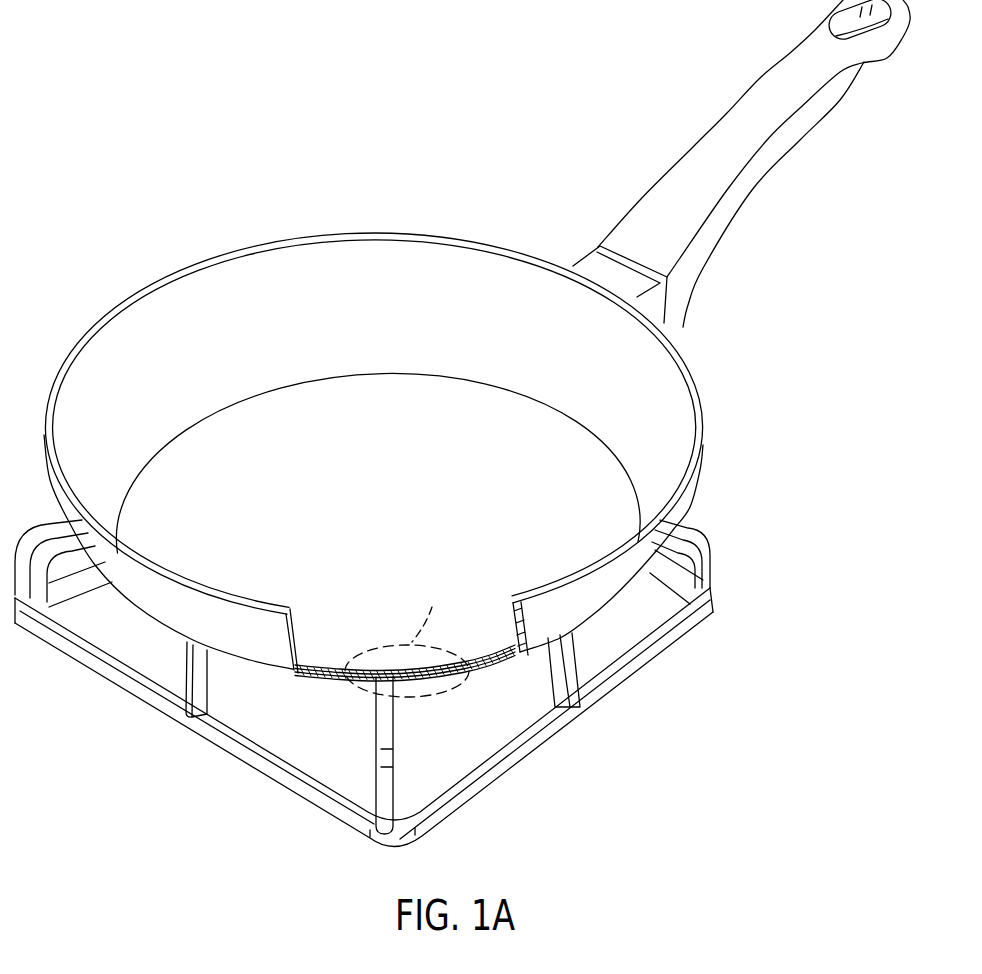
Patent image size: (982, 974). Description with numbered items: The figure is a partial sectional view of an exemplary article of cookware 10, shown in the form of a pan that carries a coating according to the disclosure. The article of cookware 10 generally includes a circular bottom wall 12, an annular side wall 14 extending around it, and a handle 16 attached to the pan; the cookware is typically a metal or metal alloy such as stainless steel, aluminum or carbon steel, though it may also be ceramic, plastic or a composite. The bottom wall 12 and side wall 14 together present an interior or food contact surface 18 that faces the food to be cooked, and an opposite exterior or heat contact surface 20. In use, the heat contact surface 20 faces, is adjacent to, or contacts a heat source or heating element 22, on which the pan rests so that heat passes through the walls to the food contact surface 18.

The article of cookware 10 is at (128, 210).
The bottom wall 12 is at (248, 422).
The side wall 14 is at (98, 362).
The handle 16 is at (716, 143).
The food contact surface 18 is at (378, 496).
The heat contact surface 20 is at (584, 598).
The heating element 22 is at (322, 679).